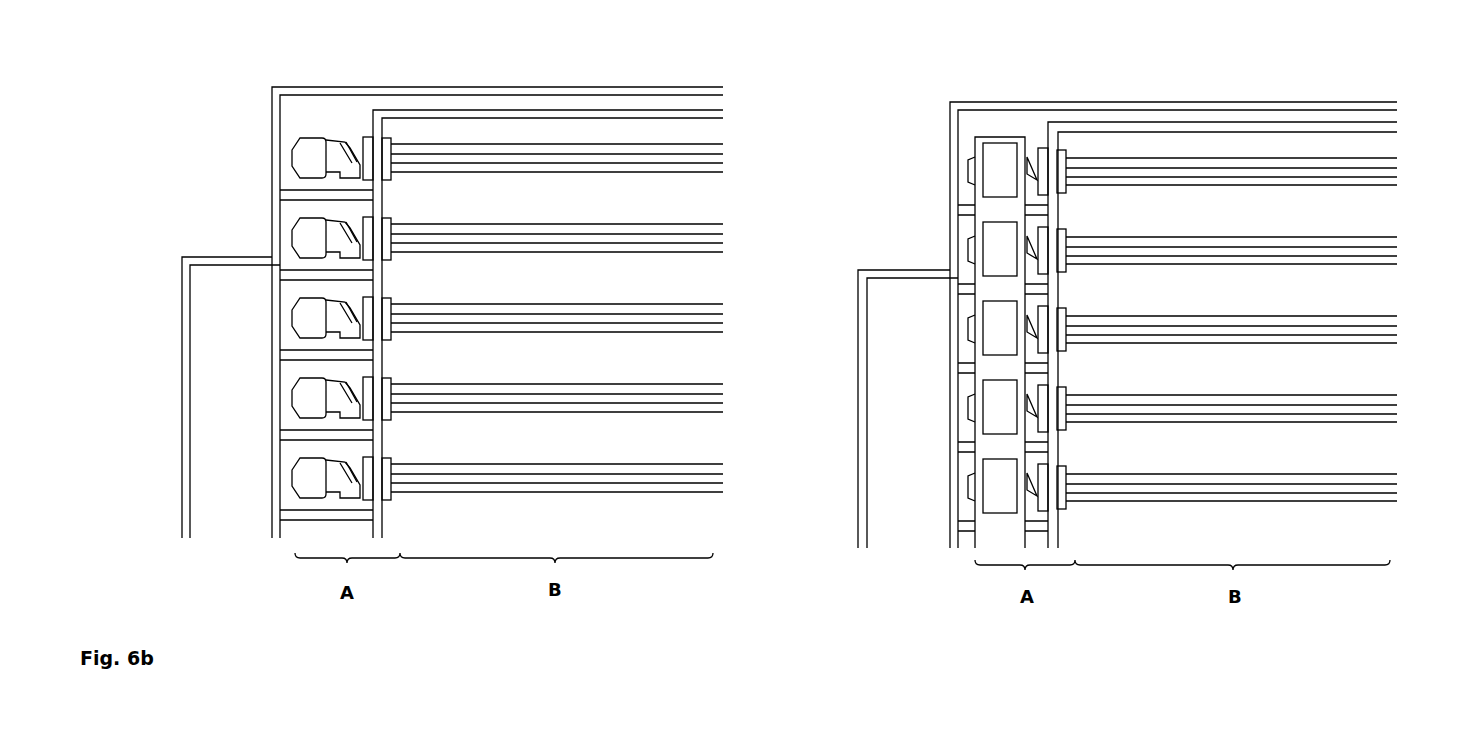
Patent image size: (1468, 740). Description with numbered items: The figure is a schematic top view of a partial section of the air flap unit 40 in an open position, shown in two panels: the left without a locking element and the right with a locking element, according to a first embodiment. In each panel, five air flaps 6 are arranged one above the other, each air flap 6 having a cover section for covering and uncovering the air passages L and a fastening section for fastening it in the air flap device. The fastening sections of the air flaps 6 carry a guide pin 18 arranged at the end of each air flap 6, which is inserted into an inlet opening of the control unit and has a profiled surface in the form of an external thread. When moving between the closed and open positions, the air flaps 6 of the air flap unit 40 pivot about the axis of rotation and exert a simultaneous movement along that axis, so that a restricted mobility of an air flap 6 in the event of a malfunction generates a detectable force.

The guide pin 18 is at (308, 163).
The air flap 6 is at (720, 148).
The air passages L is at (560, 127).
The air flap unit 40 is at (639, 577).